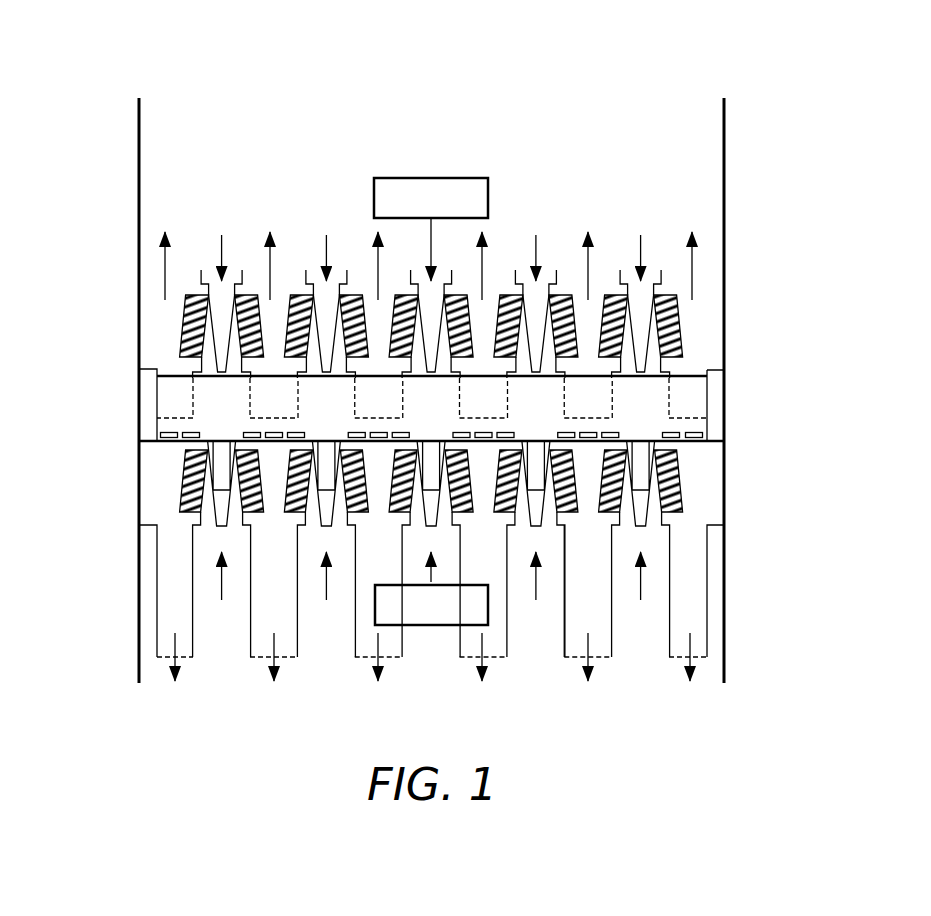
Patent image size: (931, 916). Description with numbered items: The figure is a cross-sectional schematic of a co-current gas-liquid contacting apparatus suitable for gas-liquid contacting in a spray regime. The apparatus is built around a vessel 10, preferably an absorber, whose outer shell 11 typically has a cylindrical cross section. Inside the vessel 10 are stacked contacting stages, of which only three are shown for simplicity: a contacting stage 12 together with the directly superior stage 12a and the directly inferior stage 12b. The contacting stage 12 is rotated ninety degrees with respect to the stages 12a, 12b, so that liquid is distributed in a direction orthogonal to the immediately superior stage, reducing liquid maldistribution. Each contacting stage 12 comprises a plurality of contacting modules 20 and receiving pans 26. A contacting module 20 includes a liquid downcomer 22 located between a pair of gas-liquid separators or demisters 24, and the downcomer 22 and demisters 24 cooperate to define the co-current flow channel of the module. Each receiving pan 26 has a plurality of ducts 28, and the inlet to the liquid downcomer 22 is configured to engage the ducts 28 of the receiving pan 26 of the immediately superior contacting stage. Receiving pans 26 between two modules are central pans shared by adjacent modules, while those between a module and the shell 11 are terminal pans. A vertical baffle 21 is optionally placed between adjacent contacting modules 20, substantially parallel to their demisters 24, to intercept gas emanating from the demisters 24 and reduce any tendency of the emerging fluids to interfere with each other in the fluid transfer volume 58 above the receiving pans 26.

The vessel 10 is at (94, 98).
The outer shell 11 is at (139, 178).
The contacting stage 12 is at (731, 398).
The superior contacting stage 12a is at (486, 278).
The inferior contacting stage 12b is at (478, 559).
The contacting module 20 is at (688, 490).
The vertical baffle 21 is at (589, 450).
The liquid downcomer 22 is at (708, 425).
The demister 24 is at (472, 318).
The receiving pan 26 is at (708, 372).
The duct 28 is at (461, 398).
The fluid transfer volume 58 is at (585, 318).